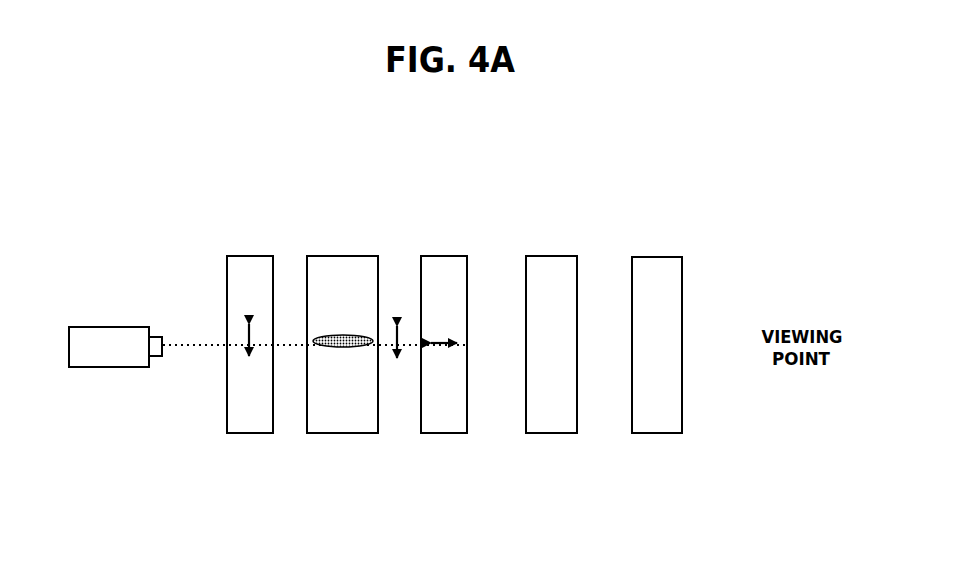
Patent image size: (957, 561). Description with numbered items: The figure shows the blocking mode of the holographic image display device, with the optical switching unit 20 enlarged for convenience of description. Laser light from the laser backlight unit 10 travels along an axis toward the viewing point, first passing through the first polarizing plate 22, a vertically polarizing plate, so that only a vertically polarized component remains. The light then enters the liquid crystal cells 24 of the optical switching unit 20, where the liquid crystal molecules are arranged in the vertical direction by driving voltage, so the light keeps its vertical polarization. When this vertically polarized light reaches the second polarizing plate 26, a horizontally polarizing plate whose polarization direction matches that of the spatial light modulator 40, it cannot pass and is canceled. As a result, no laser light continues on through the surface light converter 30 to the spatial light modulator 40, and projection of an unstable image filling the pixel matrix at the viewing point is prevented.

The laser backlight unit 10 is at (118, 327).
The optical switching unit 20 is at (275, 200).
The first polarizing plate 22 is at (258, 256).
The liquid crystal cells 24 is at (343, 256).
The second polarizing plate 26 is at (445, 256).
The surface light converter 30 is at (555, 256).
The spatial light modulator 40 is at (658, 257).